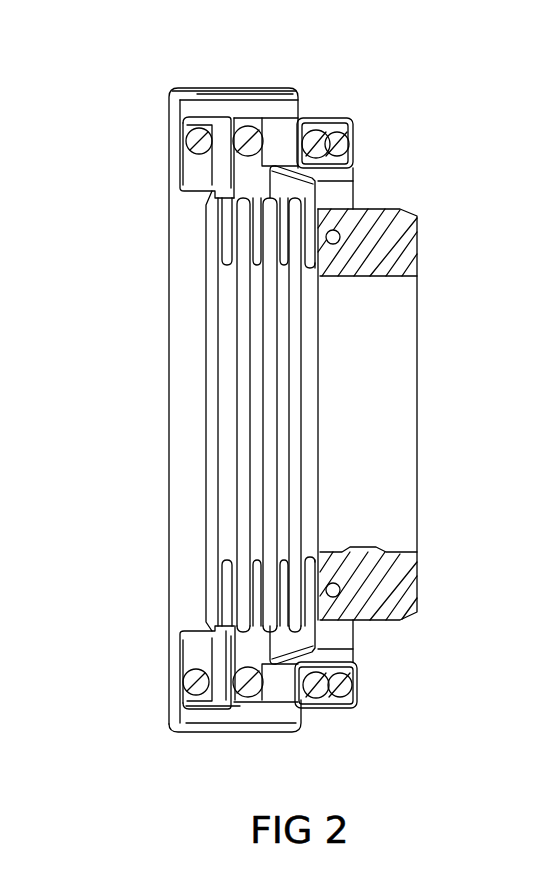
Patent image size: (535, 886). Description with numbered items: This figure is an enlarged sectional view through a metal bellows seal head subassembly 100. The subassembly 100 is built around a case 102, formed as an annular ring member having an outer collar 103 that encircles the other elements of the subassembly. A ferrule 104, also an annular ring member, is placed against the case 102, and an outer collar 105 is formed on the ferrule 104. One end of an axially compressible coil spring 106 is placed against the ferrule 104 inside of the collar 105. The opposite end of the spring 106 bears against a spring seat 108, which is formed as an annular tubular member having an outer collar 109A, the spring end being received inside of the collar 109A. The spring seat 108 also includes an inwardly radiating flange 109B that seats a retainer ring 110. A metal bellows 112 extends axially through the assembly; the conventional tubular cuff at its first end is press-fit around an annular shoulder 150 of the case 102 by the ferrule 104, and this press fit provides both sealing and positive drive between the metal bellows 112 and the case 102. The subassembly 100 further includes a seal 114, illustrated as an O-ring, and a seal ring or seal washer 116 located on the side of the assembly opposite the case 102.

The metal bellows seal head subassembly 100 is at (160, 495).
The case 102 is at (164, 166).
The outer collar 103 is at (237, 88).
The ferrule 104 is at (167, 107).
The outer collar 105 is at (193, 116).
The spring 106 is at (266, 116).
The spring seat 108 is at (360, 141).
The outer collar 109A is at (333, 118).
The inwardly radiating flange 109B is at (262, 637).
The retainer ring 110 is at (325, 189).
The metal bellows 112 is at (216, 303).
The seal 114 is at (341, 249).
The seal ring 116 is at (384, 242).
The annular shoulder 150 is at (208, 631).